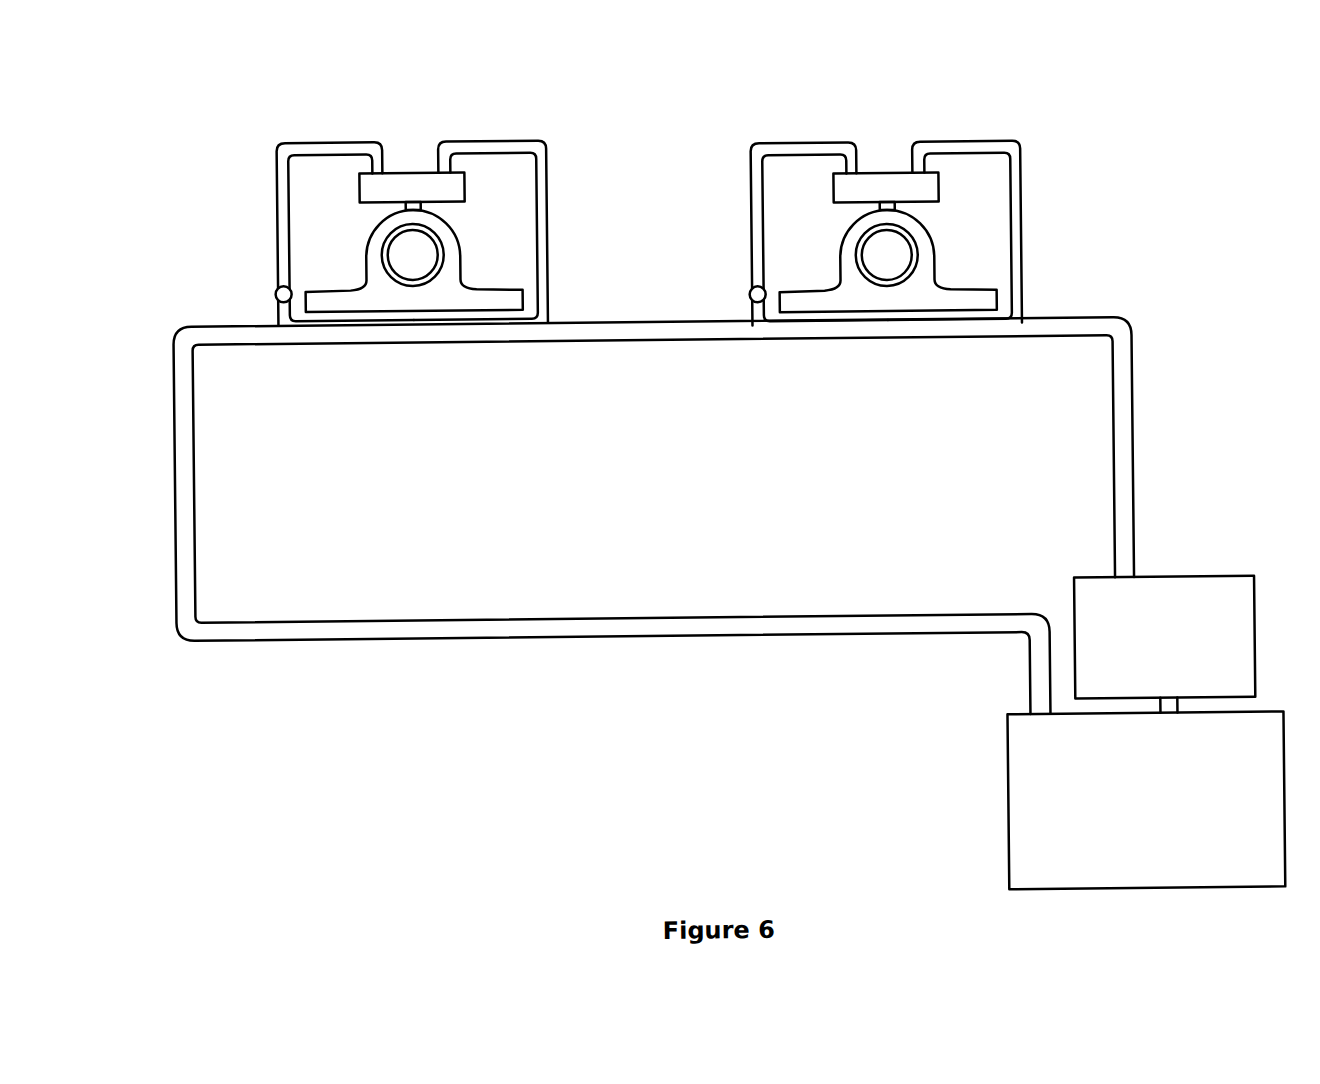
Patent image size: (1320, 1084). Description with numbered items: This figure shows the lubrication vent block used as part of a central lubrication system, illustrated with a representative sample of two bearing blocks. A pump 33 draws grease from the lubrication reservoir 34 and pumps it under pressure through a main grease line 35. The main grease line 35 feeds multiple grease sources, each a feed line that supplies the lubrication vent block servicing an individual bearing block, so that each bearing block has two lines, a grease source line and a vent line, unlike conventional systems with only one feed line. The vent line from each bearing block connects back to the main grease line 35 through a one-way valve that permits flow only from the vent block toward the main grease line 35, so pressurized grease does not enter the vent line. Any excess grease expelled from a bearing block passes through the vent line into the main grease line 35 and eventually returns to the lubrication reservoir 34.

The pump 33 is at (1164, 645).
The lubrication reservoir 34 is at (1146, 800).
The main grease line 35 is at (632, 628).